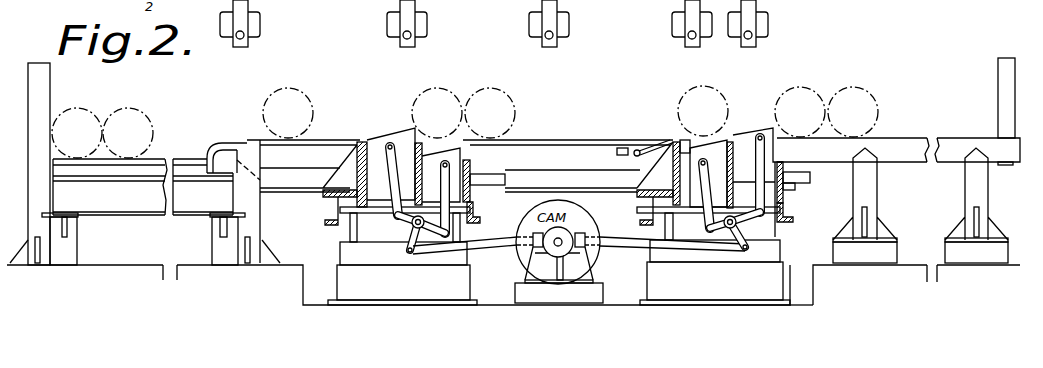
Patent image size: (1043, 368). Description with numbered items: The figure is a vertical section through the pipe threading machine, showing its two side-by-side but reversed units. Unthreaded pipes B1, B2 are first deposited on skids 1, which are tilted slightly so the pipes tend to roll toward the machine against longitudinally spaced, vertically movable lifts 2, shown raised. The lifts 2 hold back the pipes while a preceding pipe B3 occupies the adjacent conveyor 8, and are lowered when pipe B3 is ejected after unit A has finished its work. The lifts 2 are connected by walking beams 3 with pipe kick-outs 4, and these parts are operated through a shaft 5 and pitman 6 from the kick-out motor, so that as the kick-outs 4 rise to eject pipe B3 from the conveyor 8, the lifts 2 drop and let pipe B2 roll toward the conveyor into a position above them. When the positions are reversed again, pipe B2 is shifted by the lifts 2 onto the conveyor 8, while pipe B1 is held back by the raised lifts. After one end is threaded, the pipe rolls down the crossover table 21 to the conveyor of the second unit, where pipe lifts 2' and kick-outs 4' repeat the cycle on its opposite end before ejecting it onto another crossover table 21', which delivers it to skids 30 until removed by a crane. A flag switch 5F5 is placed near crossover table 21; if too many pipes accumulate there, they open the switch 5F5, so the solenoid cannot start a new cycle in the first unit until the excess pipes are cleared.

The skids 1 is at (898, 137).
The lifts 2 is at (758, 170).
The pipe lifts 2' is at (441, 174).
The walking beams 3 is at (744, 222).
The pipe kick-outs 4 is at (704, 185).
The kick-outs 4' is at (391, 164).
The shaft 5 is at (729, 228).
The pitman 6 is at (627, 248).
The conveyor 8 is at (690, 140).
The crossover table 21 is at (571, 172).
The crossover table 21' is at (307, 191).
The skids 30 is at (181, 163).
The flag switch 5F5 is at (622, 148).
The unthreaded pipe B1 is at (866, 86).
The unthreaded pipe B2 is at (805, 89).
The preceding pipe B3 is at (712, 100).